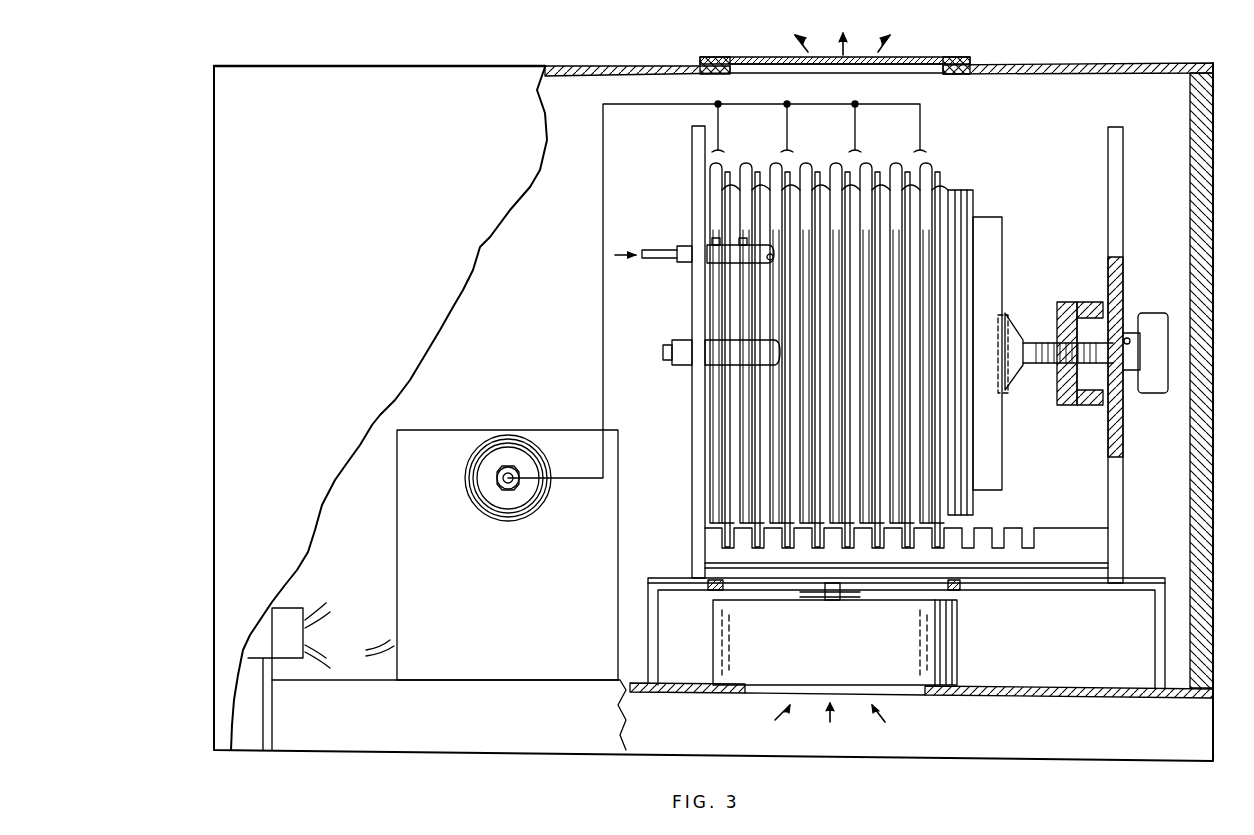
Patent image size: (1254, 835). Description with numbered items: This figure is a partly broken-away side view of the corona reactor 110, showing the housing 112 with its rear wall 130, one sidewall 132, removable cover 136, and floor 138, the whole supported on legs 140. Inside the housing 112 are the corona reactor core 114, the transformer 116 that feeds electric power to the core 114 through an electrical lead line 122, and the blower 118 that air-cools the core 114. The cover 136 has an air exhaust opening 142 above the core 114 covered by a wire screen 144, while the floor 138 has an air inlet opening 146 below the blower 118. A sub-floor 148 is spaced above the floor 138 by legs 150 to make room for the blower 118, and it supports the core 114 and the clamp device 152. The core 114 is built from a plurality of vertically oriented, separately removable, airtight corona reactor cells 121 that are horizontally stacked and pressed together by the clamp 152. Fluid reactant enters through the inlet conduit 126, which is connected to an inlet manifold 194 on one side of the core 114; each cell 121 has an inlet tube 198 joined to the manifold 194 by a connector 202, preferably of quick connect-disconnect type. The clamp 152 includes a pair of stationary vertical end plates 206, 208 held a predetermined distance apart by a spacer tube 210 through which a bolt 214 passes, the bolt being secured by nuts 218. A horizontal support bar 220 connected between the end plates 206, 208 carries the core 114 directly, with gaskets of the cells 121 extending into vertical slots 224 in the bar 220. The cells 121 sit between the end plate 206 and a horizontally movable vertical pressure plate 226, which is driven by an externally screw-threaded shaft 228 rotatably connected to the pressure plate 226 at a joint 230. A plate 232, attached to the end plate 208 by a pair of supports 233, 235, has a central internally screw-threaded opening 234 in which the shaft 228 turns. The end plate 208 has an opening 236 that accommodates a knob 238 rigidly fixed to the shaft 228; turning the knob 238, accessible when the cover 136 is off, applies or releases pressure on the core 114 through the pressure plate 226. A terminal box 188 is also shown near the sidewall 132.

The corona reactor 110 is at (651, 412).
The housing 112 is at (214, 160).
The corona reactor core 114 is at (877, 320).
The transformer 116 is at (507, 555).
The blower 118 is at (835, 634).
The corona reactor cells 121 is at (832, 185).
The electrical lead line 122 is at (602, 345).
The inlet conduit 126 is at (645, 250).
The rear wall 130 is at (1208, 196).
The sidewall 132 is at (389, 408).
The cover 136 is at (1080, 64).
The floor 138 is at (1085, 697).
The legs 140 is at (1155, 750).
The air exhaust opening 142 is at (950, 74).
The wire screen 144 is at (888, 58).
The air inlet opening 146 is at (910, 697).
The sub-floor 148 is at (1047, 586).
The legs 150 is at (658, 640).
The clamp device 152 is at (1084, 333).
The terminal box 188 is at (292, 608).
The inlet manifold 194 is at (712, 262).
The inlet tube 198 is at (748, 165).
The connectors 202 is at (743, 238).
The end plate 206 is at (692, 155).
The end plate 208 is at (1123, 172).
The spacer tube 210 is at (712, 366).
The bolt 214 is at (664, 356).
The nuts 218 is at (680, 340).
The horizontal support bar 220 is at (1058, 527).
The vertical slots 224 is at (757, 540).
The pressure plate 226 is at (1002, 262).
The screw-threaded shaft 228 is at (1030, 342).
The joint 230 is at (1005, 390).
The plate 232 is at (1066, 405).
The support 233 is at (1085, 302).
The internally screw-threaded opening 234 is at (1062, 375).
The support 235 is at (1090, 406).
The opening 236 is at (1125, 335).
The knob 238 is at (1160, 393).